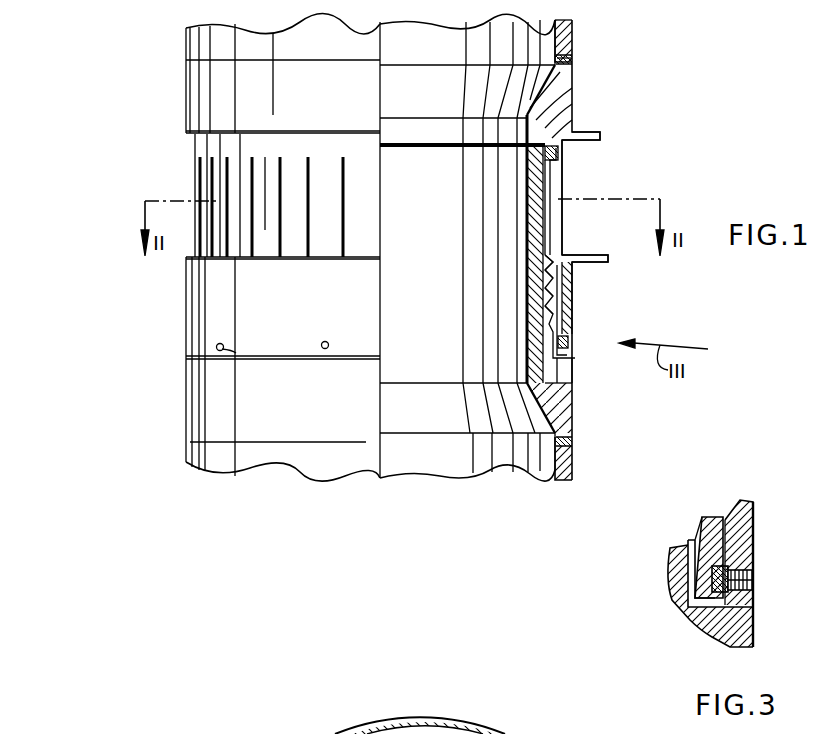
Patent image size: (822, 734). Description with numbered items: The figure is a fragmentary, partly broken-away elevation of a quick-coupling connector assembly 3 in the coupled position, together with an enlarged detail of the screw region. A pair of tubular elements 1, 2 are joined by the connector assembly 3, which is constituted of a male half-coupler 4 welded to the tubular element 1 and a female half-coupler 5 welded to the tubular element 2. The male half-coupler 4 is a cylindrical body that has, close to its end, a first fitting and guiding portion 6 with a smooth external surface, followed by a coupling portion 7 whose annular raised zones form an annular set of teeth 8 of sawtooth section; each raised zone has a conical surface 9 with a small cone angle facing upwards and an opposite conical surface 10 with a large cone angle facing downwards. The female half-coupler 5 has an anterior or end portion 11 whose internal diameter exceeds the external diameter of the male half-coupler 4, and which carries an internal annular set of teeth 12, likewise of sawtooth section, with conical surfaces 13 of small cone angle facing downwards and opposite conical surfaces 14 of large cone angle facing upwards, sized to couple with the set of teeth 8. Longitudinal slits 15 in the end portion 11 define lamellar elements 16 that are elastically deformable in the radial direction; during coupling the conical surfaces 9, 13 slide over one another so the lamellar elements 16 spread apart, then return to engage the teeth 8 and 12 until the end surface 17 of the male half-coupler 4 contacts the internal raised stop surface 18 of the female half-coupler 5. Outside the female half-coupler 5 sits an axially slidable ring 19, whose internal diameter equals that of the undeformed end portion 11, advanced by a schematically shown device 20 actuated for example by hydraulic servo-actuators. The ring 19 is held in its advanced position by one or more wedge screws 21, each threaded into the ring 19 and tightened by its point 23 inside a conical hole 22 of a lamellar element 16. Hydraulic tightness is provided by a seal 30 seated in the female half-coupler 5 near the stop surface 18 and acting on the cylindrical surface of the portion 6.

In FIG. 1, the tubular element 1 is at (525, 455).
In FIG. 1, the tubular element 2 is at (563, 40).
In FIG. 1, the quick-coupling connector assembly 3 is at (672, 296).
In FIG. 1, the male half-coupler 4 is at (560, 405).
In FIG. 3, the male half-coupler 4 is at (672, 600).
In FIG. 1, the female half-coupler 5 is at (566, 105).
In FIG. 1, the first fitting and guiding portion 6 is at (527, 195).
In FIG. 1, the coupling portion 7 is at (527, 287).
In FIG. 1, the annular set of teeth 8 is at (548, 300).
In FIG. 1, the conical surfaces 9 is at (549, 256).
In FIG. 1, the opposite conical surfaces 10 is at (557, 338).
In FIG. 1, the anterior or end portion 11 is at (590, 169).
In FIG. 1, the internal annular set of teeth 12 is at (557, 289).
In FIG. 1, the conical surfaces 13 is at (547, 272).
In FIG. 1, the opposite conical surfaces 14 is at (565, 302).
In FIG. 1, the longitudinal slits 15 is at (343, 243).
In FIG. 1, the lamellar elements 16 is at (555, 187).
In FIG. 3, the lamellar elements 16 is at (710, 518).
In FIG. 1, the end surface 17 is at (527, 160).
In FIG. 1, the internal raised stop surface 18 is at (572, 92).
In FIG. 1, the axially slidable ring 19 is at (200, 304).
In FIG. 3, the axially slidable ring 19 is at (742, 520).
In FIG. 1, the device 20 is at (600, 133).
In FIG. 1, the wedge screw 21 is at (568, 346).
In FIG. 3, the wedge screw 21 is at (755, 583).
In FIG. 3, the conical hole 22 is at (702, 610).
In FIG. 3, the point 23 is at (702, 545).
In FIG. 1, the seal 30 is at (558, 152).